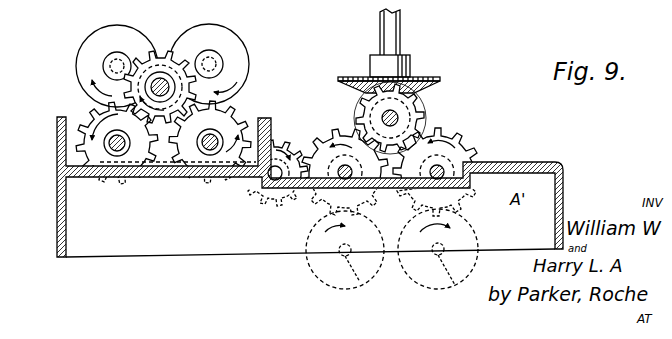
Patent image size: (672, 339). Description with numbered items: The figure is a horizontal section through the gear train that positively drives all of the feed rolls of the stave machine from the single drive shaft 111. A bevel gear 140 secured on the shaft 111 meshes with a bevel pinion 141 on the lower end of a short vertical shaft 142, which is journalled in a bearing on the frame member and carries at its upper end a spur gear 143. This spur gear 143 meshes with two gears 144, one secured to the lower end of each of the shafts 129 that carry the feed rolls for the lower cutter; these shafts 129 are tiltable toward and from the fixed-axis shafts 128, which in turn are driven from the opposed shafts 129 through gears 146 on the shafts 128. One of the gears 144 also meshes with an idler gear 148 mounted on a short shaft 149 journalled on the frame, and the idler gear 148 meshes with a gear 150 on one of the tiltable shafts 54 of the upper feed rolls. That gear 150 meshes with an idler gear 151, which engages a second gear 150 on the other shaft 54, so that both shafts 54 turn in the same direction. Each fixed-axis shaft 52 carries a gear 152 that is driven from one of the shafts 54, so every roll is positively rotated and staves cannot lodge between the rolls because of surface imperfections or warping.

The shaft 52 is at (103, 66).
The shaft 54 is at (108, 147).
The drive shaft 111 is at (401, 44).
The shaft 128 is at (353, 262).
The shaft 129 is at (330, 194).
The bevel gear 140 is at (412, 77).
The bevel pinion 141 is at (425, 98).
The short vertical shaft 142 is at (382, 117).
The spur gear 143 is at (352, 84).
The gear 144 is at (322, 146).
The gear 146 is at (308, 276).
The idler gear 148 is at (279, 141).
The short shaft 149 is at (268, 190).
The gear 150 is at (90, 118).
The idler gear 151 is at (160, 52).
The gear 152 is at (140, 25).